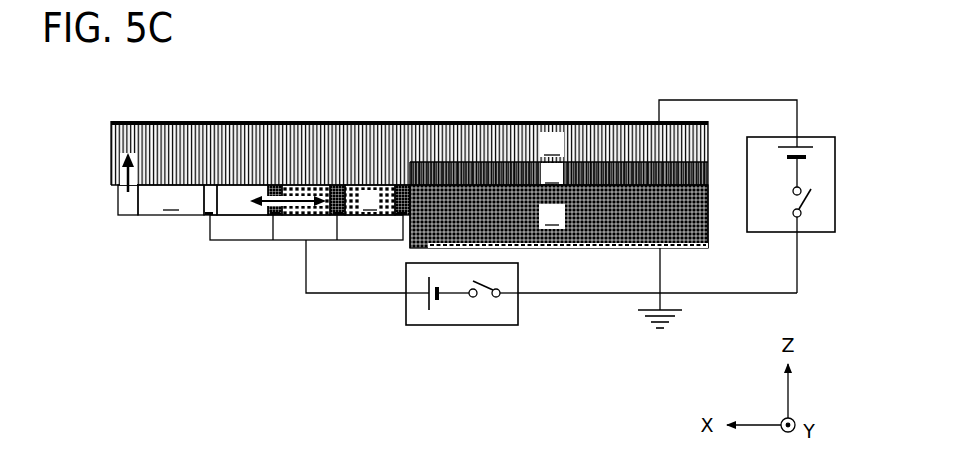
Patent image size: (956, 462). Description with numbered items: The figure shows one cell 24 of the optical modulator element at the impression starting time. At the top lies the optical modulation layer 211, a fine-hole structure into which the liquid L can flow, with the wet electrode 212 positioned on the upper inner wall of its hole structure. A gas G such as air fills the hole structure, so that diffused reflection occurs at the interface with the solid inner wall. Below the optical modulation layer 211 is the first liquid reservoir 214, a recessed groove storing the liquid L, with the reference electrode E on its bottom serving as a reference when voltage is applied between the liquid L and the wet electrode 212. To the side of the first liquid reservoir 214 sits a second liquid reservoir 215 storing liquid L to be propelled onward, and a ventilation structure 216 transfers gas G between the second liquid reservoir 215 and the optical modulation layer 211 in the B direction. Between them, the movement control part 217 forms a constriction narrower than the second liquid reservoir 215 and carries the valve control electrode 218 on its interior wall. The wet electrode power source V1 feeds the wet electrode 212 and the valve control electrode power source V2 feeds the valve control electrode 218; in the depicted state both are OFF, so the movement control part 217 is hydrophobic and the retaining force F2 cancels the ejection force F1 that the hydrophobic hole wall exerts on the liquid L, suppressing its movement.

The cell 24 is at (579, 102).
The optical modulation layer 211 is at (108, 145).
The wet electrode 212 is at (289, 122).
The first liquid reservoir 214 is at (719, 227).
The second liquid reservoir 215 is at (155, 217).
The ventilation structure 216 is at (113, 203).
The movement control part 217 is at (220, 203).
The valve control electrode 218 is at (206, 217).
The gas G is at (150, 116).
The liquid L is at (405, 253).
The B direction B is at (127, 174).
The reference electrode E is at (623, 249).
The ejection force F1 is at (293, 204).
The retaining force F2 is at (299, 204).
The wet electrode power source V1 is at (808, 233).
The valve control electrode power source V2 is at (434, 327).